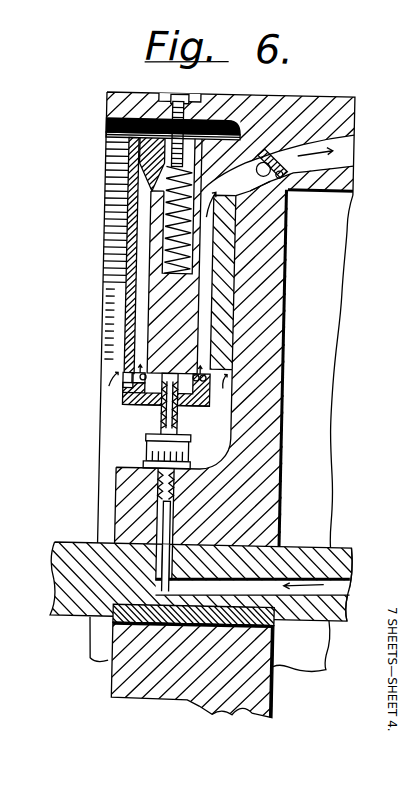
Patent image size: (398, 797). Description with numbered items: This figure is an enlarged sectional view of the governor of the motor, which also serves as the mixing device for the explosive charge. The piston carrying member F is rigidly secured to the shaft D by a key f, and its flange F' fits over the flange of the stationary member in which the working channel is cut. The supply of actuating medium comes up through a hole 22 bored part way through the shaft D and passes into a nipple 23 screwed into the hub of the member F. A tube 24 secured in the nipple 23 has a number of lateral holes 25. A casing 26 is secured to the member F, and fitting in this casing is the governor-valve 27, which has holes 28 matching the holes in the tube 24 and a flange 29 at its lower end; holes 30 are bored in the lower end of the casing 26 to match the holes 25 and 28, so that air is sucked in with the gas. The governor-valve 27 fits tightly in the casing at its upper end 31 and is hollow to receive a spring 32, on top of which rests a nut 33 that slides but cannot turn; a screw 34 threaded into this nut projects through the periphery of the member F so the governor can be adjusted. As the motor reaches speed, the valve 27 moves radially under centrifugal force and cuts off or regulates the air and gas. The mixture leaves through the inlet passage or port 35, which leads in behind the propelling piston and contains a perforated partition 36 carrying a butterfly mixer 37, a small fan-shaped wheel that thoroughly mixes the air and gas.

The hole 22 is at (270, 585).
The nipple 23 is at (155, 451).
The tube 24 is at (167, 427).
The lateral holes 25 is at (150, 429).
The casing 26 is at (131, 248).
The governor-valve 27 is at (158, 221).
The holes 28 is at (156, 371).
The flange 29 is at (151, 404).
The holes 30 is at (129, 375).
The upper end 31 is at (108, 158).
The spring 32 is at (137, 182).
The nut 33 is at (111, 145).
The screw 34 is at (109, 130).
The inlet passage or port 35 is at (314, 139).
The partition 36 is at (264, 150).
The butterfly mixer 37 is at (262, 180).
The piston carrying member F is at (204, 299).
The flange F' is at (351, 293).
The shaft D is at (67, 549).
The key f is at (119, 628).